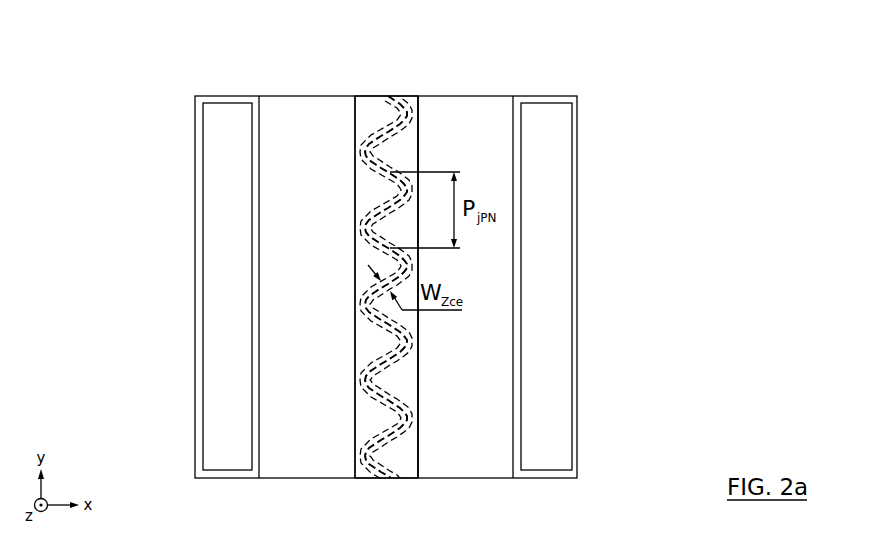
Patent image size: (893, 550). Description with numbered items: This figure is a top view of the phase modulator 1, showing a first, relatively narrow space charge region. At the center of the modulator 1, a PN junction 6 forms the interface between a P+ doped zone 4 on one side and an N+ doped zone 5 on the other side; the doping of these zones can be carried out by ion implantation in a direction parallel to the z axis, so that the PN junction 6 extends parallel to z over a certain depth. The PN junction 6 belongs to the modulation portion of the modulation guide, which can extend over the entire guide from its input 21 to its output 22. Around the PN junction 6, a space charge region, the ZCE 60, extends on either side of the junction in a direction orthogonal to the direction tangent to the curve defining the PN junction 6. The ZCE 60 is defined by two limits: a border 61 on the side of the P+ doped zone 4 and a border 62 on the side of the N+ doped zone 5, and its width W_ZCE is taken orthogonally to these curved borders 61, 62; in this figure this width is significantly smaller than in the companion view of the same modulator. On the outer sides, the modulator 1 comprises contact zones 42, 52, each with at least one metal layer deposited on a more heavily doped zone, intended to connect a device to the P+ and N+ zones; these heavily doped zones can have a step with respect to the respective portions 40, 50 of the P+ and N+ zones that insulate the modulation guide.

The modulator 1 is at (160, 75).
The P+ doped zone 4 is at (365, 430).
The N+ doped zone 5 is at (412, 440).
The PN junction 6 is at (412, 118).
The input 21 is at (363, 478).
The output 22 is at (402, 95).
The portion of the P+ zone 40 is at (297, 147).
The contact zone 42 is at (232, 116).
The portion of the N+ zone 50 is at (488, 120).
The contact zone 52 is at (548, 116).
The space charge region (ZCE) 60 is at (361, 261).
The border 61 is at (390, 102).
The border 62 is at (404, 114).